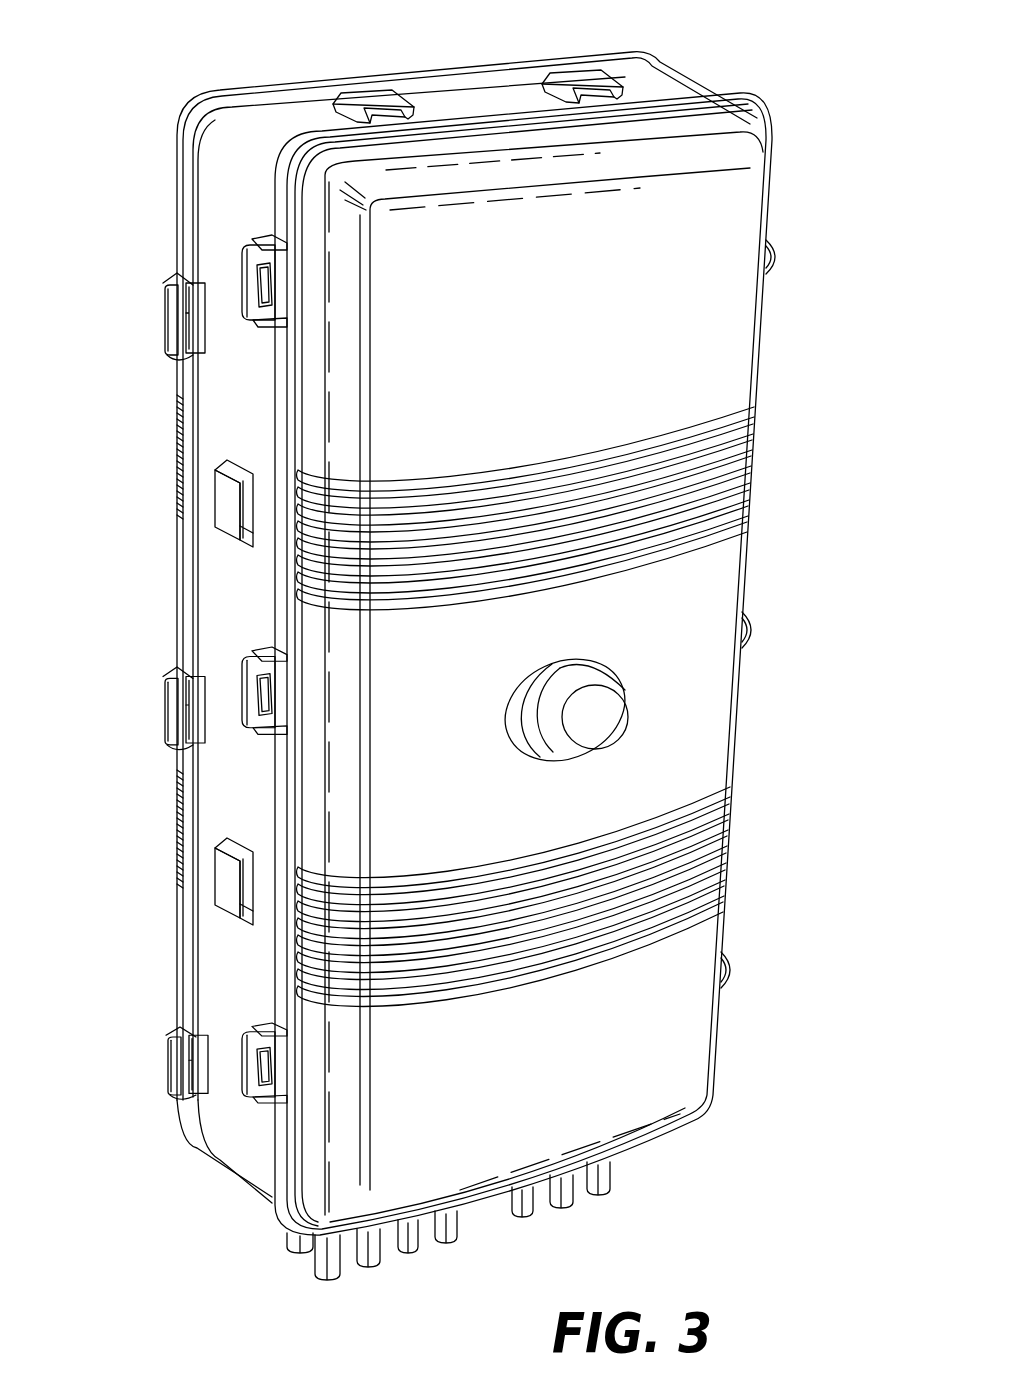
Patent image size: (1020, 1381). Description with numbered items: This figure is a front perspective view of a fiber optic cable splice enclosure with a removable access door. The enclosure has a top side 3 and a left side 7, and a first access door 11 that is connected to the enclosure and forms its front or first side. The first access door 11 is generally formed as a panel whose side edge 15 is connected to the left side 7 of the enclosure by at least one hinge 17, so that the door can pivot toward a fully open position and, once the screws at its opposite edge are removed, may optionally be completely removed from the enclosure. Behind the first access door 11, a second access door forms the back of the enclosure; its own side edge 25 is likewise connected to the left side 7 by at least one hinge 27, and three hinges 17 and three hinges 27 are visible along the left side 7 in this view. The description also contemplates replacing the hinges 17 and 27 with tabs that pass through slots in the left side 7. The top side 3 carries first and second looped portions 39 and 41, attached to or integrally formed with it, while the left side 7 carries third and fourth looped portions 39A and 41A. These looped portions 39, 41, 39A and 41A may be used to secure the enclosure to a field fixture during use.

The top side 3 is at (475, 111).
The left side 7 is at (243, 424).
The first access door 11 is at (541, 337).
The side edge 15 is at (275, 972).
The hinge 17 is at (243, 260).
The side edge 25 is at (187, 191).
The hinge 27 is at (165, 300).
The first looped portion 39 is at (585, 76).
The third looped portion 39A is at (215, 515).
The second looped portion 41 is at (368, 97).
The fourth looped portion 41A is at (225, 897).